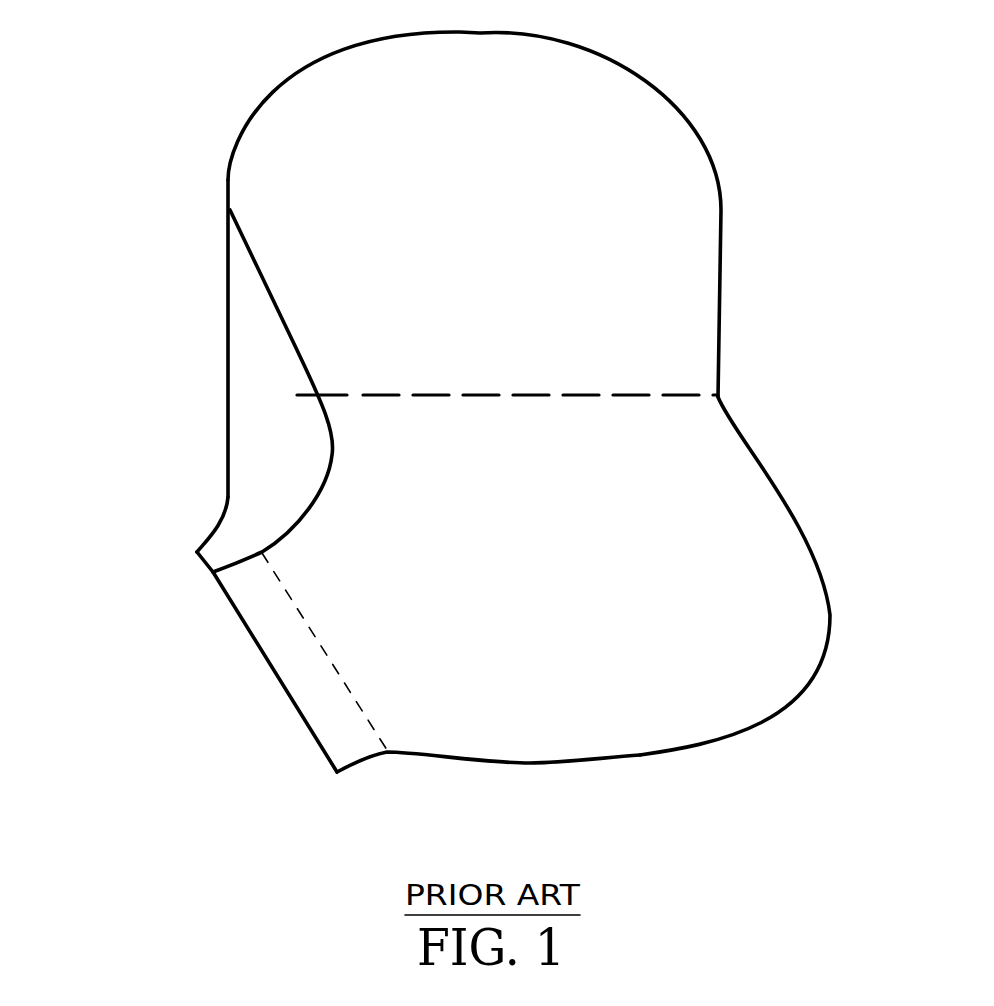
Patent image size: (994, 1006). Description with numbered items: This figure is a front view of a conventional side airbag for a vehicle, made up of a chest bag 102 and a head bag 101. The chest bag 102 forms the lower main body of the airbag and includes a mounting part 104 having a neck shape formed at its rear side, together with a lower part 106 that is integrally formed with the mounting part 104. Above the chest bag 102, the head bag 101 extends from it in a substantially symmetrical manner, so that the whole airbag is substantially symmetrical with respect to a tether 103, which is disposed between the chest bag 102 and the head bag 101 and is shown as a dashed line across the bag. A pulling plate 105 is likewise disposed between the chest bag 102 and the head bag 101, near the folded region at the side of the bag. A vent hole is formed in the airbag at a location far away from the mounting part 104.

The head bag 101 is at (660, 218).
The chest bag 102 is at (725, 518).
The tether 103 is at (610, 390).
The mounting part 104 is at (322, 681).
The pulling plate 105 is at (270, 435).
The lower part 106 is at (662, 755).